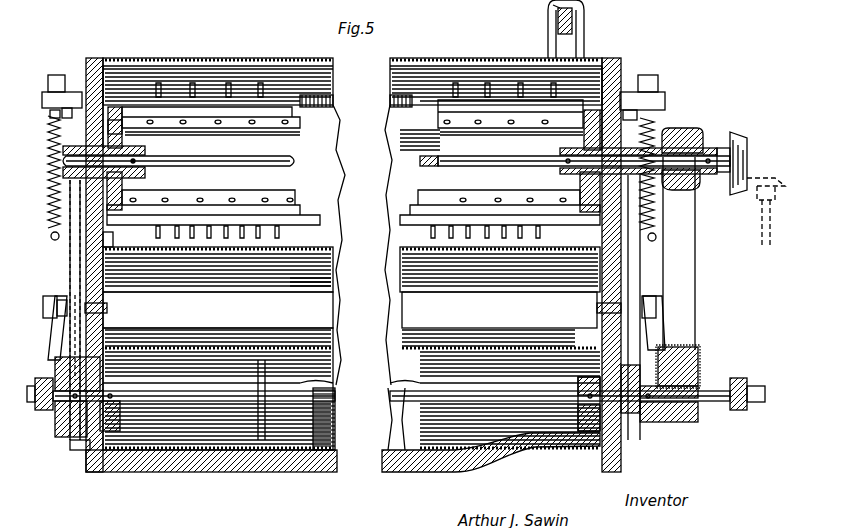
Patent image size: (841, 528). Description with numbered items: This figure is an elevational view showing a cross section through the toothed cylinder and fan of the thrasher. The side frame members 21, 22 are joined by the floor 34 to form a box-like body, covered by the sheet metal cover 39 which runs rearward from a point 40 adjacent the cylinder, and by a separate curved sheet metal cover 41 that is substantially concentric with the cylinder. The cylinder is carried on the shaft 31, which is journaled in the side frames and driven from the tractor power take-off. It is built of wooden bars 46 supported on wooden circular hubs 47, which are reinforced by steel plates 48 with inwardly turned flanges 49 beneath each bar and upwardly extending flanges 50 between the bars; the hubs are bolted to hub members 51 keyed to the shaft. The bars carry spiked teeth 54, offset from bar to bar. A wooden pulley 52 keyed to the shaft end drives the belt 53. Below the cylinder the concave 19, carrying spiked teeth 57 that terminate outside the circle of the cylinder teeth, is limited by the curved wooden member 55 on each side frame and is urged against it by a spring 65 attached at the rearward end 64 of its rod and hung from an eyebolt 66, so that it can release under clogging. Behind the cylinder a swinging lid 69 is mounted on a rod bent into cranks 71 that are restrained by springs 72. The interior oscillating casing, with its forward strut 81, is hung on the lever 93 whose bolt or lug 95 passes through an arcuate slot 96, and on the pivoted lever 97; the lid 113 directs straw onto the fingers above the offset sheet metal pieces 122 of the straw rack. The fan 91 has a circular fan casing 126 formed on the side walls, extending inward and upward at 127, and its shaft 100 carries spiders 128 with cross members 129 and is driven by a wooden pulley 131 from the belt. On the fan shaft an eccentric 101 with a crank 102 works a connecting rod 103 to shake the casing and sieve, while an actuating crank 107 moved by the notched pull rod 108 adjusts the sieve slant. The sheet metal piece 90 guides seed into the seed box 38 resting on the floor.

The concave 19 is at (415, 262).
The side frame member 21 is at (88, 62).
The side frame member 22 is at (620, 70).
The shaft 31 is at (420, 161).
The floor 34 is at (152, 472).
The seed box 38 is at (388, 406).
The sheet metal cover 39 is at (390, 90).
The point adjacent toothed cylinder 40 is at (420, 98).
The curved sheet metal cover 41 is at (334, 64).
The wooden bars 46 is at (438, 110).
The circular hubs 47 is at (584, 132).
The steel plates 48 is at (640, 78).
The inwardly turned flanges 49 is at (588, 110).
The upwardly extending flanges 50 is at (600, 110).
The hub members 51 is at (128, 192).
The wooden pulley 52 is at (675, 190).
The belt 53 is at (685, 240).
The spiked teeth 54 is at (255, 228).
The curved wooden member 55 is at (107, 240).
The spiked teeth 57 is at (468, 228).
The rearward end 64 is at (656, 240).
The spring 65 is at (48, 204).
The eyebolt 66 is at (50, 120).
The swinging lid 69 is at (400, 138).
The cranks 71 is at (76, 92).
The springs 72 is at (60, 160).
The forward strut 81 is at (412, 302).
The sheet metal piece 90 is at (405, 330).
The fan 91 is at (312, 375).
The lever 93 is at (632, 416).
The bolt or lug 95 is at (598, 308).
The arcuate slot 96 is at (660, 296).
The pivoted lever 97 is at (642, 272).
The fan shaft 100 is at (205, 395).
The eccentric 101 is at (62, 436).
The crank 102 is at (30, 400).
The connecting rod 103 is at (662, 322).
The actuating crank 107 is at (585, 24).
The pull rod 108 is at (555, 6).
The sheet metal lid 113 is at (386, 180).
The sheet metal pieces 122 is at (412, 292).
The fan casing 126 is at (596, 431).
The fan casing extension 127 is at (390, 383).
The spiders 128 is at (590, 431).
The cross members 129 is at (265, 440).
The wooden pulley 131 is at (700, 358).